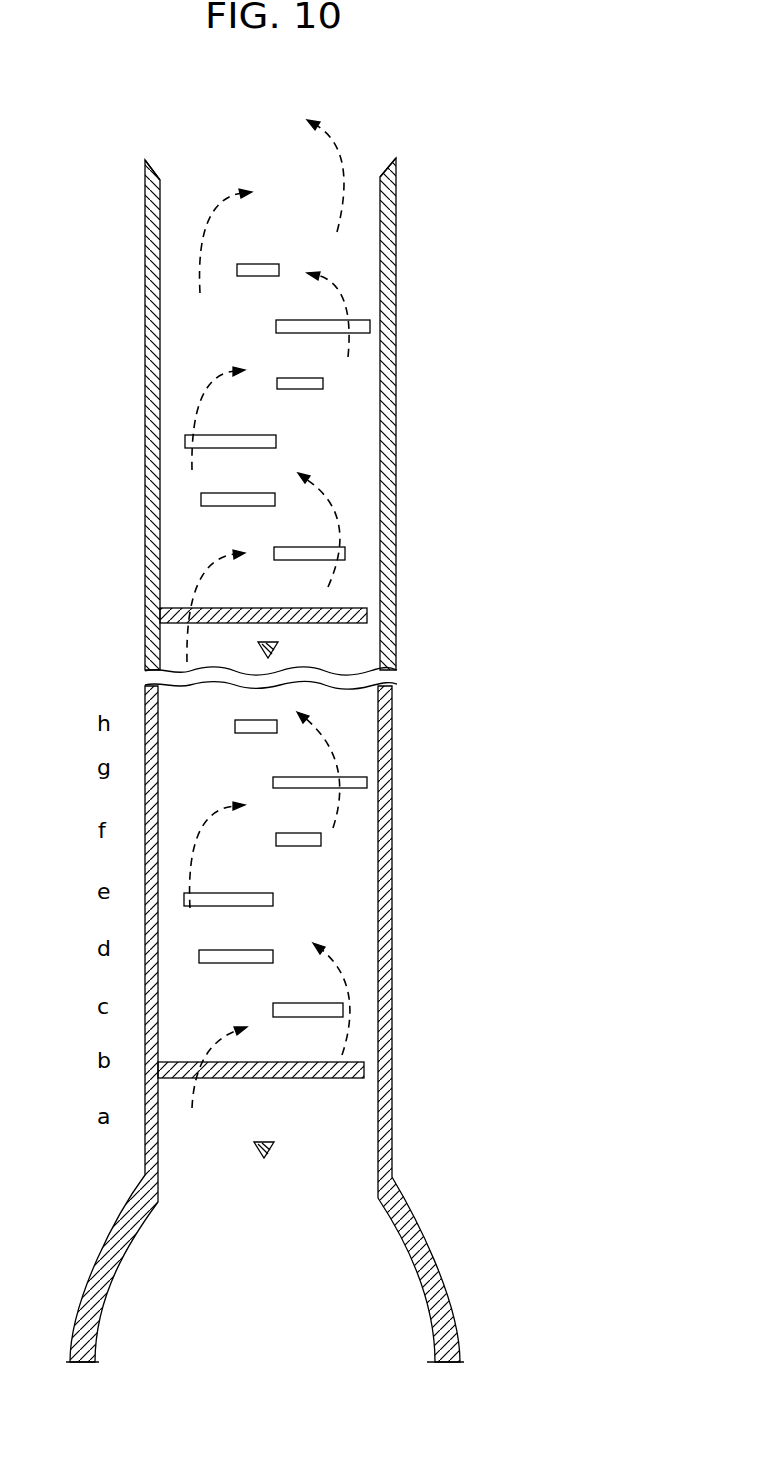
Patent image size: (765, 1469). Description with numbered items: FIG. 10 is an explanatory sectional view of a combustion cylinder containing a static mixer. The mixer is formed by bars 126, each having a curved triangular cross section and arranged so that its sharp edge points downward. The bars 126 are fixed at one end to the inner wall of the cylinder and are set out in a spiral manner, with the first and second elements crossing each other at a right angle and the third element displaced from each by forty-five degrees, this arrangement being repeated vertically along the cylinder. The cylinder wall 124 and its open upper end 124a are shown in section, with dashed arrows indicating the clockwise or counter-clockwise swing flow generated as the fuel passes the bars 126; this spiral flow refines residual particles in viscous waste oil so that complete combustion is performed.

The outlet end of tube 124a is at (384, 170).
The tube 124 is at (386, 541).
The bars 126 is at (358, 777).